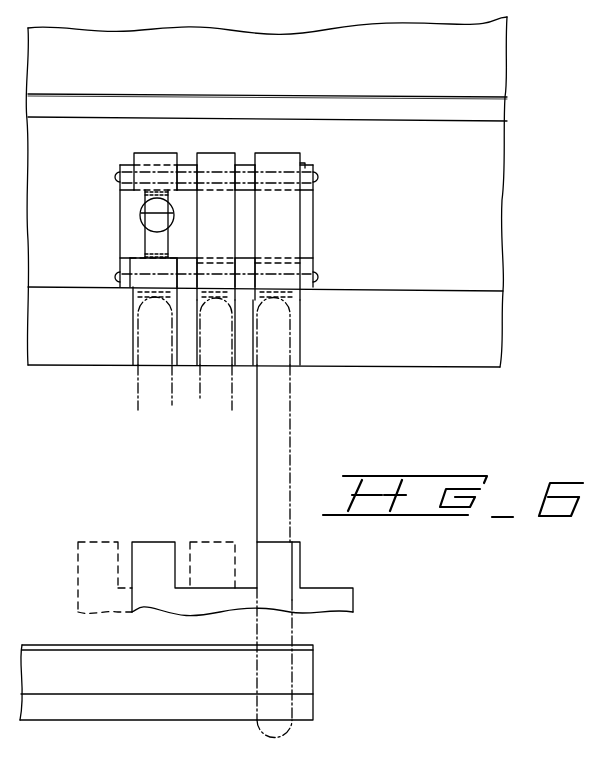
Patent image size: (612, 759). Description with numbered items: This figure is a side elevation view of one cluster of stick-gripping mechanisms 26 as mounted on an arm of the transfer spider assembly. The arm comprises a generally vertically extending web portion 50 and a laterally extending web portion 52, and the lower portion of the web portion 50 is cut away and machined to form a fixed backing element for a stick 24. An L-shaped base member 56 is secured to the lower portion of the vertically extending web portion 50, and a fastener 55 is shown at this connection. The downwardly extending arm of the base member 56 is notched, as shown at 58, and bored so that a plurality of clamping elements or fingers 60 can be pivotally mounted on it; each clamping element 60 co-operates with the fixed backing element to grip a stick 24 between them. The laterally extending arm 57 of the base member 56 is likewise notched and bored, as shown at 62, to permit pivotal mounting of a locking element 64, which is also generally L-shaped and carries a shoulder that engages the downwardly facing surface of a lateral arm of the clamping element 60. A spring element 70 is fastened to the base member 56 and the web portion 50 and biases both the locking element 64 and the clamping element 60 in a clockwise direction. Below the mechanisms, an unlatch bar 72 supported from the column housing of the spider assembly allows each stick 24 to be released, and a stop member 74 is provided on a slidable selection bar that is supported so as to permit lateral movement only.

The stick 24 is at (152, 395).
The stick-gripping mechanism 26 is at (134, 152).
The vertically extending web portion 50 is at (447, 220).
The laterally extending web portion 52 is at (400, 108).
The screw 55 is at (140, 216).
The L-shaped base member 56 is at (314, 224).
The laterally extending arm of base member 57 is at (316, 172).
The notch 58 is at (300, 258).
The clamping element 60 is at (133, 320).
The notch and bore 62 is at (302, 165).
The locking element 64 is at (222, 243).
The spring element 70 is at (142, 248).
The unlatch bar 72 is at (200, 689).
The stop member 74 is at (322, 586).